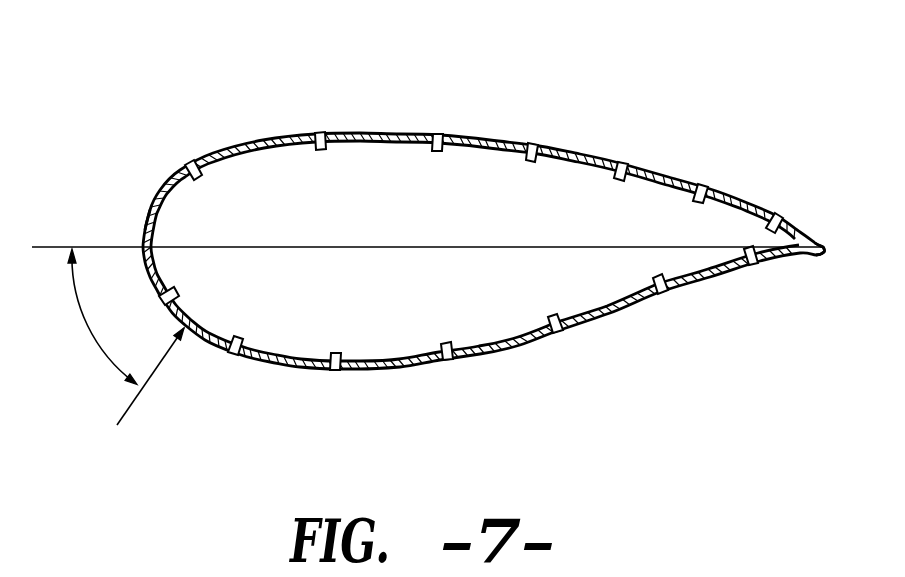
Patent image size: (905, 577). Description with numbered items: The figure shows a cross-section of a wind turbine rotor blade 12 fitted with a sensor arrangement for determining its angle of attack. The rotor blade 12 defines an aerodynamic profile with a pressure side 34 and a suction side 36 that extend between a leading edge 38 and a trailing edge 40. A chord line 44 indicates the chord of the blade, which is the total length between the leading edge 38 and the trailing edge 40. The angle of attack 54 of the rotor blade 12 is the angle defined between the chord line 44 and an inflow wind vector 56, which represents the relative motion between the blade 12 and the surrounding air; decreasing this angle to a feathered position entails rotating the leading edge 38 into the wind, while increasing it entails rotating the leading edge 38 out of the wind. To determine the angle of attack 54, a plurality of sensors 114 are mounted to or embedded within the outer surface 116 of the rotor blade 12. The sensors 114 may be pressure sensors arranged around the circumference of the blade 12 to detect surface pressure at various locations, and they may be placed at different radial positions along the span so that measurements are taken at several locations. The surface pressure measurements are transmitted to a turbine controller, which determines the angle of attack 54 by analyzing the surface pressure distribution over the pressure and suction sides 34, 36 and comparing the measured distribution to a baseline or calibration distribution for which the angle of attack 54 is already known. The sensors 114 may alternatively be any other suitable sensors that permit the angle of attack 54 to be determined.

The rotor blade 12 is at (644, 104).
The pressure side 34 is at (340, 370).
The suction side 36 is at (377, 133).
The leading edge 38 is at (142, 247).
The trailing edge 40 is at (827, 250).
The chord line 44 is at (353, 247).
The angle of attack 54 is at (87, 327).
The inflow wind vector 56 is at (130, 408).
The sensors 114 is at (197, 181).
The outer surface 116 is at (247, 144).